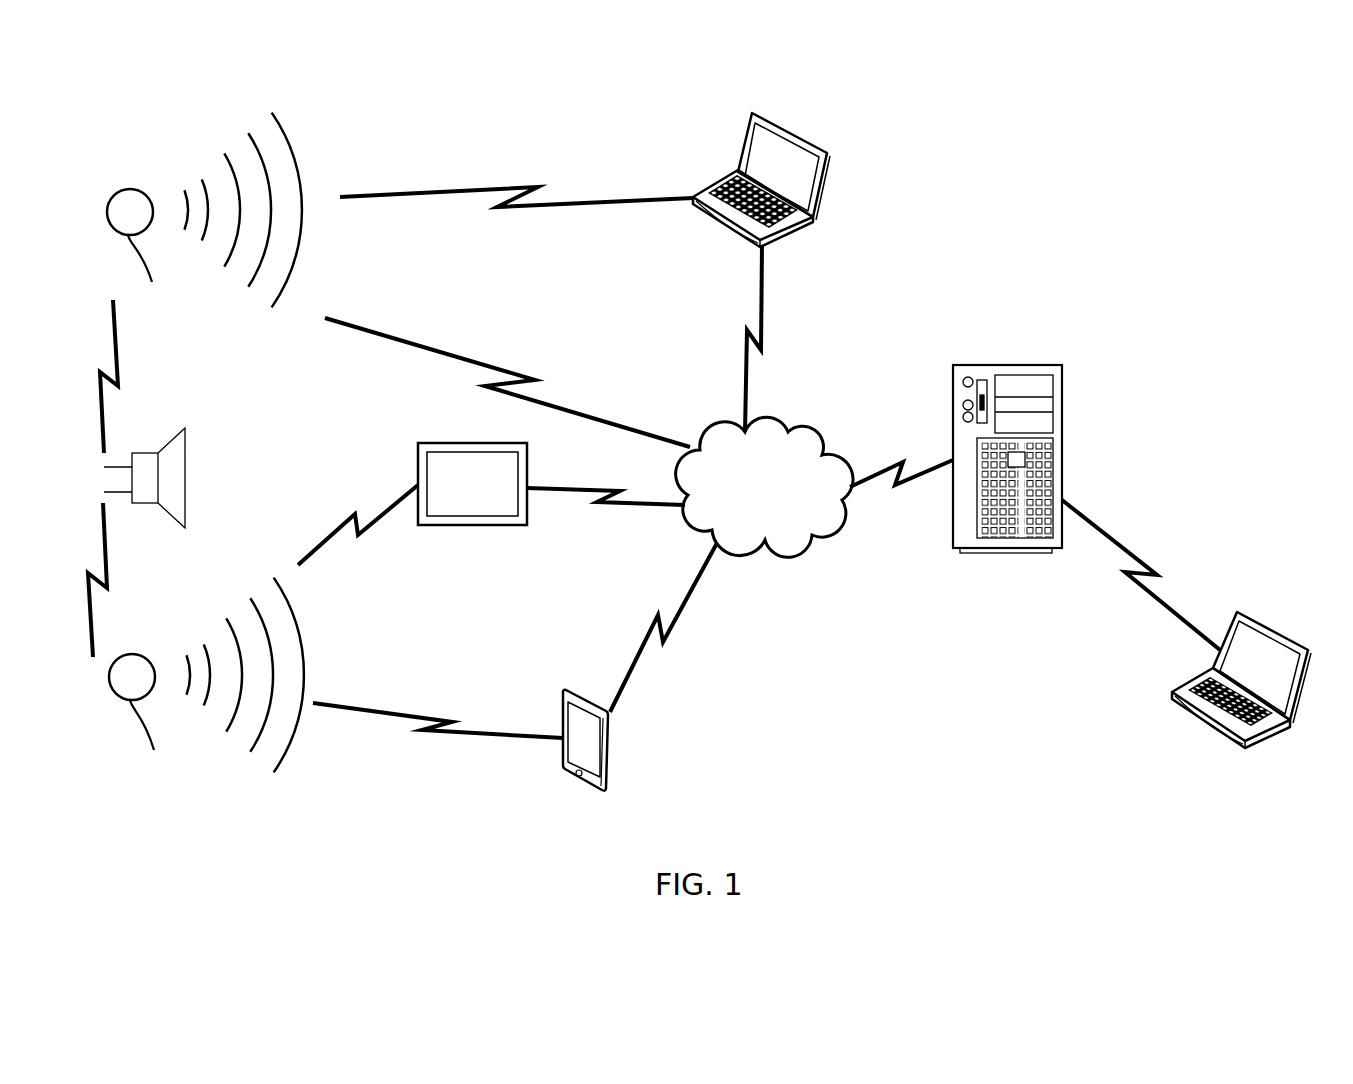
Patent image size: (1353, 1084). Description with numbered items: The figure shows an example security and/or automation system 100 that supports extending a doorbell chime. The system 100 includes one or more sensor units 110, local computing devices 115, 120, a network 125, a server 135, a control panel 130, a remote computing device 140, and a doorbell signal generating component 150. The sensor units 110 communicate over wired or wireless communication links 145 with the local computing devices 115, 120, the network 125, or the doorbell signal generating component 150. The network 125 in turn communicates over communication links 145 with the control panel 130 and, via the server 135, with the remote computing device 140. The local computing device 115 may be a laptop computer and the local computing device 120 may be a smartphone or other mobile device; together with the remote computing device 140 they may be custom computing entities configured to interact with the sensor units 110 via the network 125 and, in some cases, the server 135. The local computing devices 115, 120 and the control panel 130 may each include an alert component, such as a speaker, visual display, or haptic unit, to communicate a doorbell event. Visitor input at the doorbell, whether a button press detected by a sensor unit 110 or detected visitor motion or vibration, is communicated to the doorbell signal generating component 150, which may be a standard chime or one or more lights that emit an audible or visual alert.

The security and/or automation system 100 is at (142, 836).
The sensor unit 110 is at (205, 443).
The local computing device 115 is at (735, 235).
The local computing device 120 is at (573, 781).
The network 125 is at (790, 425).
The control panel 130 is at (476, 527).
The server 135 is at (1030, 365).
The remote computing device 140 is at (1205, 731).
The communication link 145 is at (102, 368).
The doorbell signal generating component 150 is at (185, 502).